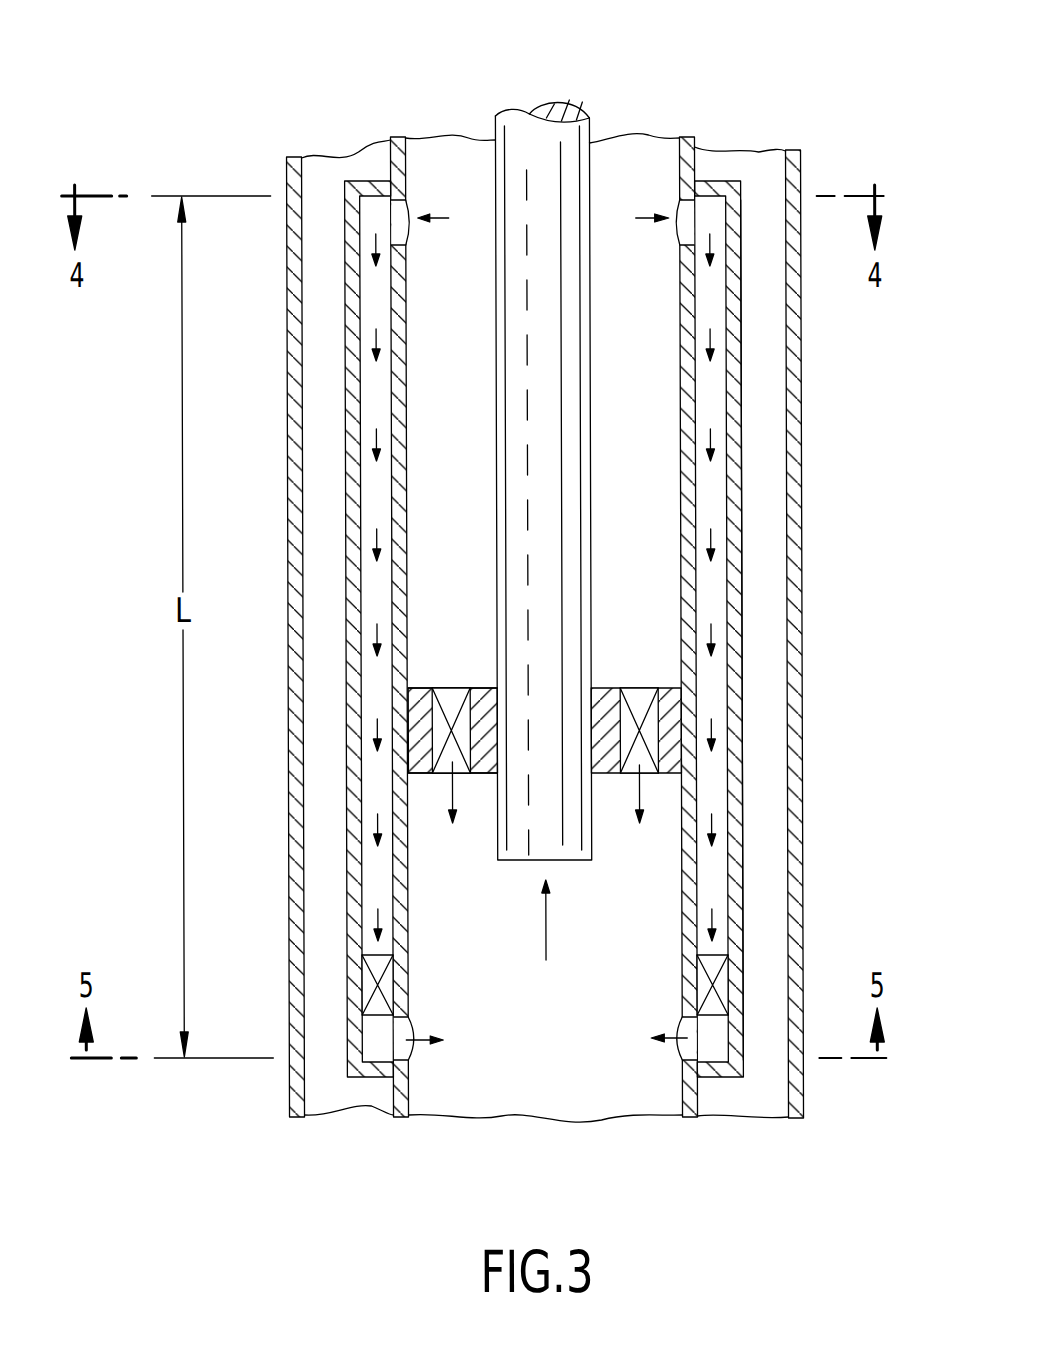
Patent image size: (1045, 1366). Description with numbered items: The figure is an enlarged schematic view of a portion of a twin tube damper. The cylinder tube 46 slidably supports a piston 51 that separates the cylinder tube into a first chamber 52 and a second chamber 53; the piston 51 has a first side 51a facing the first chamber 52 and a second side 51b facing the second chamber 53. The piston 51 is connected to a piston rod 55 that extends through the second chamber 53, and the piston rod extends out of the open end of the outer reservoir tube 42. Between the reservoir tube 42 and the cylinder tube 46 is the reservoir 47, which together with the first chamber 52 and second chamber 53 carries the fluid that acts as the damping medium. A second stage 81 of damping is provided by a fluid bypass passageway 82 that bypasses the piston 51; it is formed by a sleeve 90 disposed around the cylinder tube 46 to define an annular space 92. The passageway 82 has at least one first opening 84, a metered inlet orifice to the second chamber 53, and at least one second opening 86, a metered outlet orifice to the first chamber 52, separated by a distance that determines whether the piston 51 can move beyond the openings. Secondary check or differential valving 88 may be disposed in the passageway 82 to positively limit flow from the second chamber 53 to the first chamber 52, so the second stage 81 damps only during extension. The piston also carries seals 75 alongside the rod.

The reservoir tube 42 is at (802, 630).
The cylinder tube 46 is at (700, 795).
The reservoir 47 is at (763, 548).
The piston 51 is at (485, 775).
The first side of piston 51a is at (420, 773).
The second side of piston 51b is at (409, 689).
The first chamber 52 is at (595, 935).
The second chamber 53 is at (613, 481).
The piston rod 55 is at (543, 150).
The piston seal 75 is at (460, 700).
The second stage 81 is at (748, 438).
The fluid bypass passageway 82 is at (715, 692).
The first opening 84 is at (404, 208).
The second opening 86 is at (405, 1050).
The secondary check or differential valving 88 is at (372, 984).
The sleeve 90 is at (736, 500).
The annular space 92 is at (711, 303).